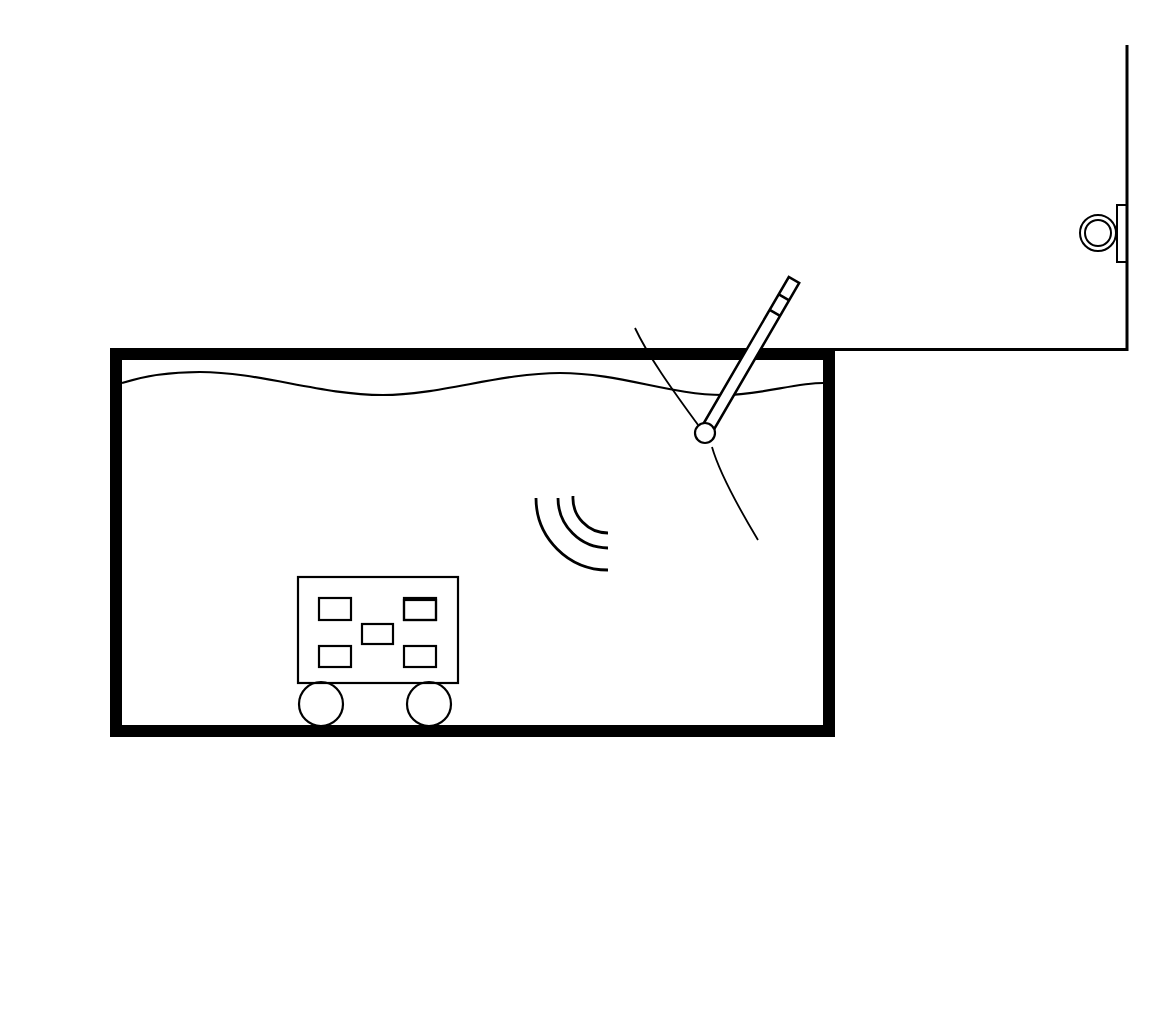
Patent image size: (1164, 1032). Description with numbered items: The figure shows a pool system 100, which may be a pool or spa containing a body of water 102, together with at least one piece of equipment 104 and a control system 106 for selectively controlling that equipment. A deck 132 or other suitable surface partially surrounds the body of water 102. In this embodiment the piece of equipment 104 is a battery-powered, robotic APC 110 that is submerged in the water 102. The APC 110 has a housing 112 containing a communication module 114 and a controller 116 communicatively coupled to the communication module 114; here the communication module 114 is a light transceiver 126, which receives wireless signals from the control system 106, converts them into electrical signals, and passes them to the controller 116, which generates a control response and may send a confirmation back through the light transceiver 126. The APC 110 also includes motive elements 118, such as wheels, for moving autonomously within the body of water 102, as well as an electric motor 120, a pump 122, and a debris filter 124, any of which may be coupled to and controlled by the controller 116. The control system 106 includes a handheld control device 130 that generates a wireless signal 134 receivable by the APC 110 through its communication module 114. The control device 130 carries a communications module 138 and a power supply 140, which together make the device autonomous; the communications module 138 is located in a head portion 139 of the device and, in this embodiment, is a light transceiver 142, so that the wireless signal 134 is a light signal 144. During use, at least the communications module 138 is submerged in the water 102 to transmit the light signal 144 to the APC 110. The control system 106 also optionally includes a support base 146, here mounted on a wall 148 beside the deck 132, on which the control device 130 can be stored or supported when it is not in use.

The pool system 100 is at (340, 167).
The body of water 102 is at (199, 470).
The piece of equipment 104 is at (275, 505).
The control system 106 is at (752, 177).
The APC 110 is at (298, 630).
The housing 112 is at (392, 663).
The communication module 114 is at (410, 600).
The controller 116 is at (420, 655).
The motive elements 118 is at (317, 710).
The electric motor 120 is at (375, 626).
The pump 122 is at (335, 610).
The debris filter 124 is at (341, 667).
The light transceiver 126 is at (415, 598).
The control device 130 is at (750, 348).
The deck 132 is at (977, 348).
The wireless signal 134 is at (560, 507).
The communications module 138 is at (655, 359).
The head portion 139 is at (744, 509).
The power supply 140 is at (777, 300).
The light transceiver 142 is at (700, 447).
The light signal 144 is at (598, 528).
The support base 146 is at (1088, 217).
The wall 148 is at (1127, 130).